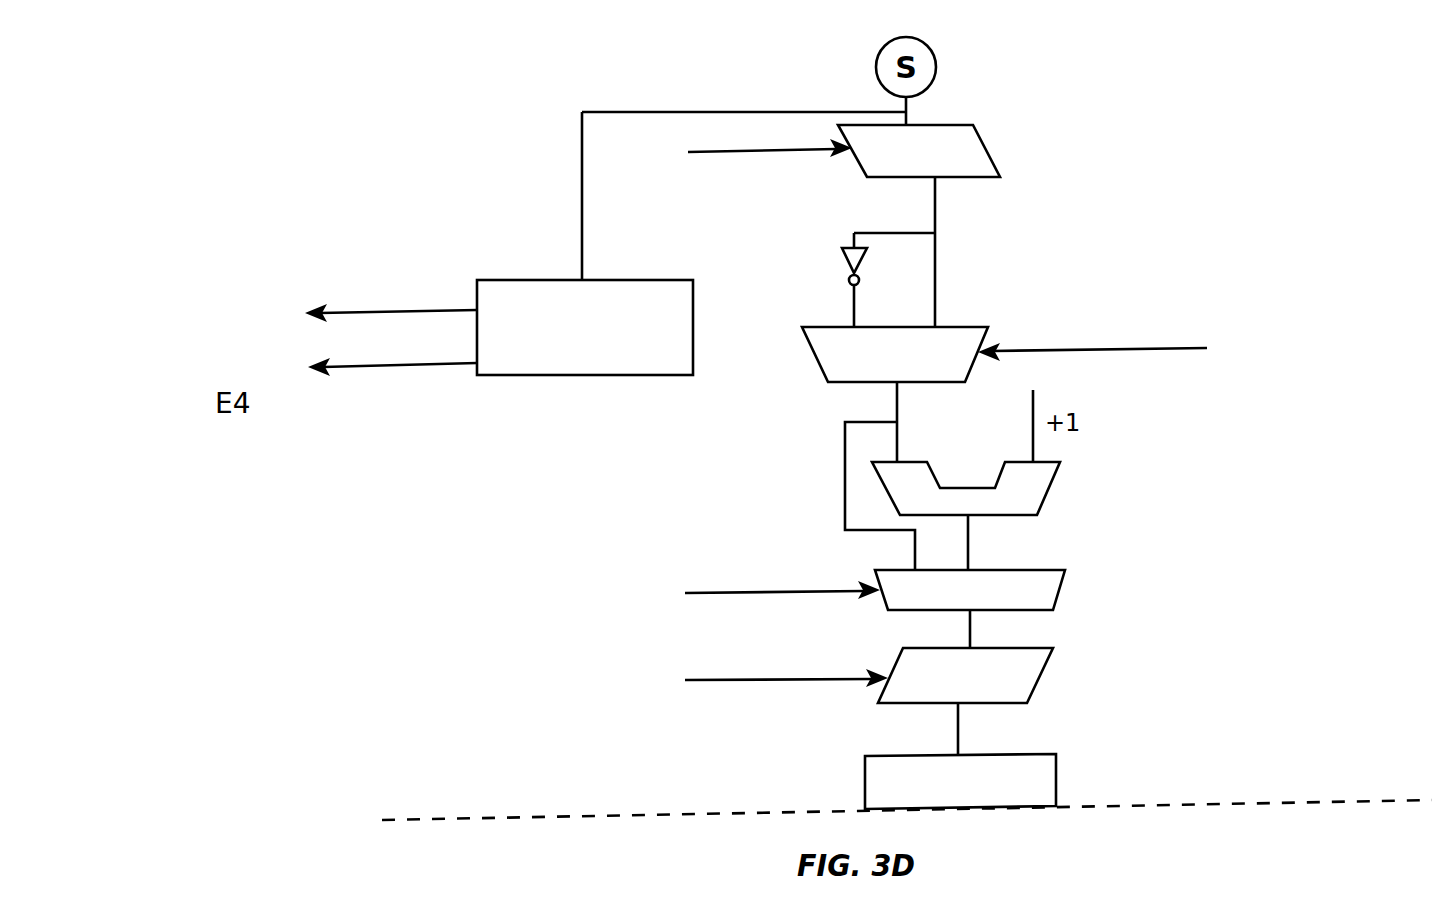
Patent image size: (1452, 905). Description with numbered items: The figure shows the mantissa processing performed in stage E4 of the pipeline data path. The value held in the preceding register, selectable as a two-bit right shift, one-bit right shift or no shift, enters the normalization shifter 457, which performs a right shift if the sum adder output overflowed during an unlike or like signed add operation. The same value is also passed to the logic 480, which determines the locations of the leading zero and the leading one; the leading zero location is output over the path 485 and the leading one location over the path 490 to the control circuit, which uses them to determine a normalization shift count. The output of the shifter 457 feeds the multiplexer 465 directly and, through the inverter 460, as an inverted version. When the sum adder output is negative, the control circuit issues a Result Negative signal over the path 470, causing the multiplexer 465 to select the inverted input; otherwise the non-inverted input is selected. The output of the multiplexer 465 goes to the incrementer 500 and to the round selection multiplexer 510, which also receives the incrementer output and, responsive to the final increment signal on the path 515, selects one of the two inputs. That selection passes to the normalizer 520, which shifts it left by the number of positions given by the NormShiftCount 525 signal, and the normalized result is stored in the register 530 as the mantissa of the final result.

The normalization shifter 457 is at (990, 140).
The inverter 460 is at (848, 262).
The multiplexer 465 is at (950, 327).
The path 470 is at (1072, 349).
The logic 480 is at (567, 280).
The path 485 is at (333, 312).
The path 490 is at (387, 363).
The incrementer 500 is at (953, 452).
The round selection multiplexer 510 is at (1020, 563).
The path 515 is at (740, 594).
The normalizer 520 is at (1038, 678).
The NormShiftCount signal 525 is at (730, 680).
The register 530 is at (1056, 778).